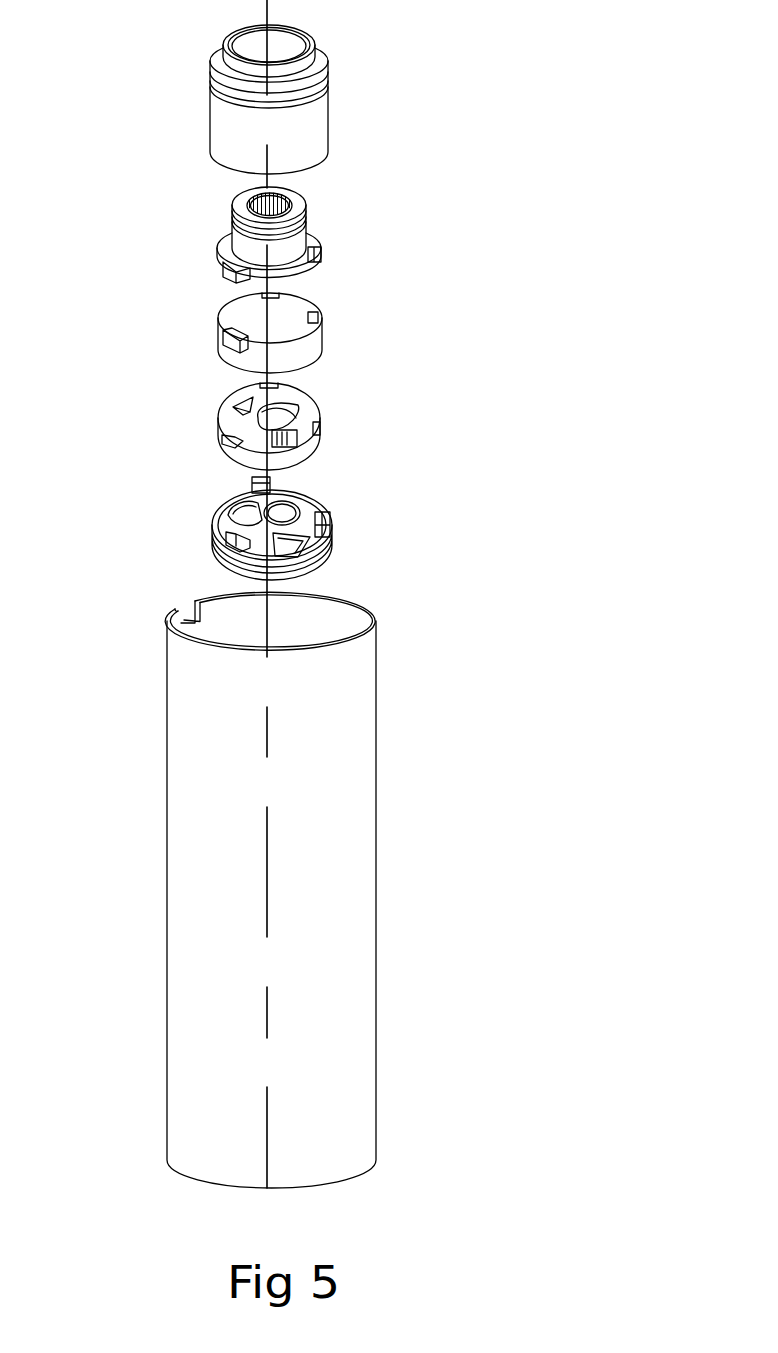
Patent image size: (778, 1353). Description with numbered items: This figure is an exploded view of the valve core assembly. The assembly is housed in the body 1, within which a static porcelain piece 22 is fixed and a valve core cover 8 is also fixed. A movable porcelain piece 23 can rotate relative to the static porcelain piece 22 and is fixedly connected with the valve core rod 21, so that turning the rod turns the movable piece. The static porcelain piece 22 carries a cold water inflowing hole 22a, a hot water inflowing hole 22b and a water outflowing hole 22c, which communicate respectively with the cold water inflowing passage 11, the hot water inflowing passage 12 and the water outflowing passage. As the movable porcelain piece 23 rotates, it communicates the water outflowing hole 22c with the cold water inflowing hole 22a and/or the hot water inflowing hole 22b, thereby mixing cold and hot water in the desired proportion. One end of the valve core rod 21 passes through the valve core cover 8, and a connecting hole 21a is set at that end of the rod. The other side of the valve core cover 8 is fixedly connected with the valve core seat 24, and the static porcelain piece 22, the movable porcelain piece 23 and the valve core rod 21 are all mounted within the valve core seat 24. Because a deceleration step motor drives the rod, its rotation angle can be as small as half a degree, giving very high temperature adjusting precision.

The body 1 is at (205, 760).
The valve core cover 8 is at (302, 72).
The valve core seat 24 is at (232, 135).
The valve core rod 21 is at (243, 254).
The connecting hole 21a is at (290, 205).
The movable porcelain piece 23 is at (298, 333).
The static porcelain piece 22 is at (279, 457).
The cold water inflowing hole 22a is at (250, 438).
The hot water inflowing hole 22b is at (282, 442).
The water outflowing hole 22c is at (305, 404).
The cold water inflowing passage 11 is at (272, 552).
The hot water inflowing passage 12 is at (313, 545).